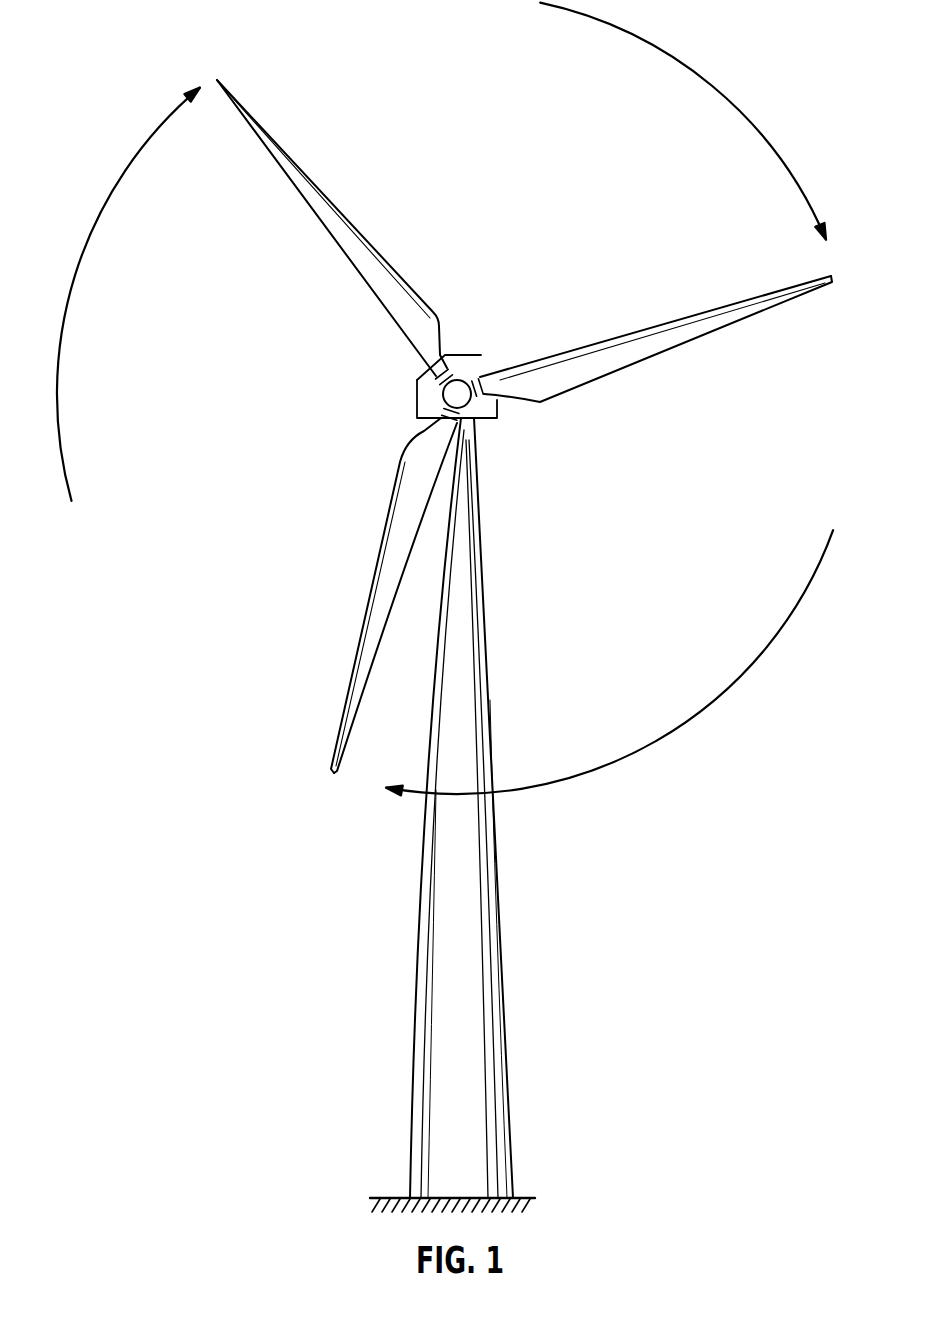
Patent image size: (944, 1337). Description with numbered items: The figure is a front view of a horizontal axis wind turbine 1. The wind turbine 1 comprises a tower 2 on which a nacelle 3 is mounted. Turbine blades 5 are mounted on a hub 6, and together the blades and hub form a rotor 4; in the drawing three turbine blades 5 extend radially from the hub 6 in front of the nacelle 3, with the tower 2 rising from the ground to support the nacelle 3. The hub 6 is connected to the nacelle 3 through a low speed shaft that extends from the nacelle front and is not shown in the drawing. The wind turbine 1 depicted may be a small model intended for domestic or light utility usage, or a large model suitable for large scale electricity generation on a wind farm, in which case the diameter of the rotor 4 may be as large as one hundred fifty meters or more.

The wind turbine 1 is at (390, 1027).
The tower 2 is at (487, 890).
The nacelle 3 is at (481, 412).
The rotor 4 is at (538, 291).
The turbine blade 5 is at (339, 216).
The hub 6 is at (458, 392).